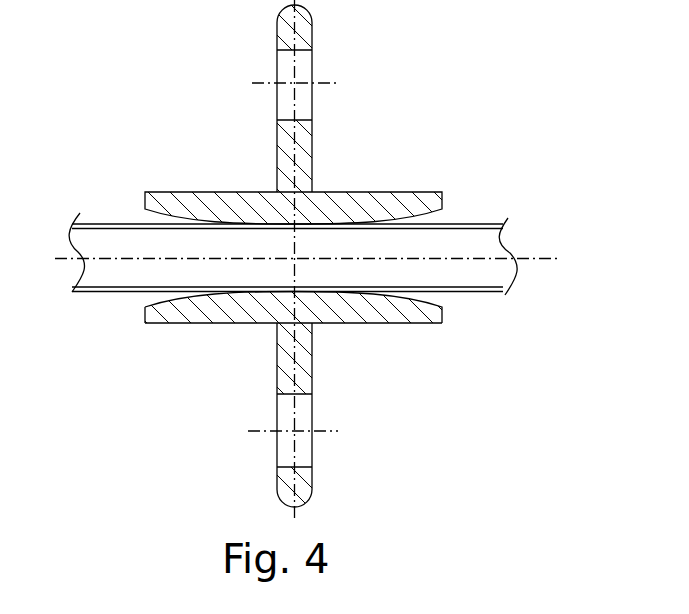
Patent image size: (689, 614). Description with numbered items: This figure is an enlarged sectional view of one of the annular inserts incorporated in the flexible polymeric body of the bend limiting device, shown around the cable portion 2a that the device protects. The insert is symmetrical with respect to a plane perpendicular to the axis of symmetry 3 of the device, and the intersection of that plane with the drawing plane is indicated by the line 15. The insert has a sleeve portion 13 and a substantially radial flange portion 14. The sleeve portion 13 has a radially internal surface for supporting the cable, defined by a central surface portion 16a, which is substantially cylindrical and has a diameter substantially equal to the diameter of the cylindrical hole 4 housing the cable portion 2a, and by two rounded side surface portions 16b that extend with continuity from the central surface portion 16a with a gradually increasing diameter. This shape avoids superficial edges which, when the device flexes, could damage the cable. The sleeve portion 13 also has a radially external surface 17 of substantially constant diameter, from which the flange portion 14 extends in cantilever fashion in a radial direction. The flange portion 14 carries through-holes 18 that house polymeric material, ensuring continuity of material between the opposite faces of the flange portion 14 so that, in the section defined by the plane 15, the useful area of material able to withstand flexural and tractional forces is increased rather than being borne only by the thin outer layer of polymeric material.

The cable portion 2a is at (133, 273).
The axis of symmetry 3 is at (105, 262).
The cylindrical hole 4 is at (333, 283).
The sleeve portion 13 is at (322, 364).
The flange portion 14 is at (224, 415).
The plane of symmetry 15 is at (348, 0).
The central surface portion 16a is at (307, 240).
The rounded side surface portions 16b is at (173, 229).
The radially external surface 17 is at (395, 334).
The through-holes 18 is at (282, 452).